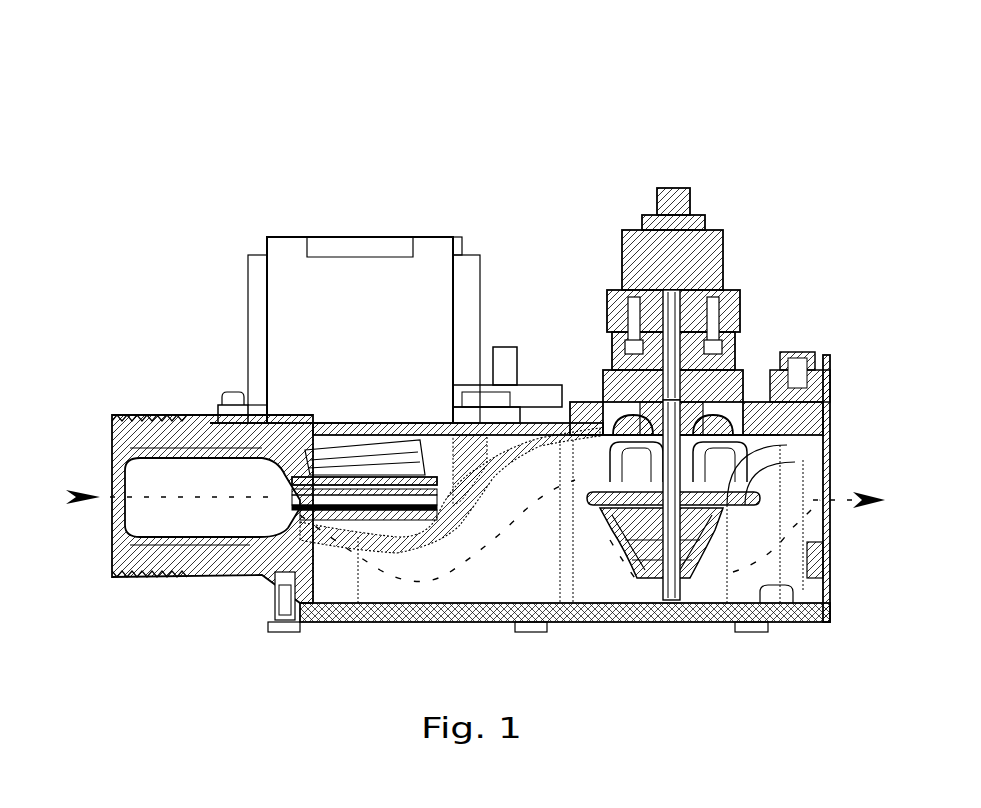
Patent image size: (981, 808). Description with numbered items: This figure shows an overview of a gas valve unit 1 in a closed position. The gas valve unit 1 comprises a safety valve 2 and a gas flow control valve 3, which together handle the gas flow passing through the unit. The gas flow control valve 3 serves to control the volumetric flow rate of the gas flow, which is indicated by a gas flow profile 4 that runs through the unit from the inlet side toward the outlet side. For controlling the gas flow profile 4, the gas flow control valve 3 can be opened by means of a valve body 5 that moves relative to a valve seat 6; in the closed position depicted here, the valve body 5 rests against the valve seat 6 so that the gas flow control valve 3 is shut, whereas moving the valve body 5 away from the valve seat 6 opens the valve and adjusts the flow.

The gas valve unit 1 is at (388, 110).
The safety valve 2 is at (158, 234).
The gas flow control valve 3 is at (818, 256).
The gas flow profile 4 is at (460, 567).
The valve body 5 is at (673, 508).
The valve seat 6 is at (610, 510).